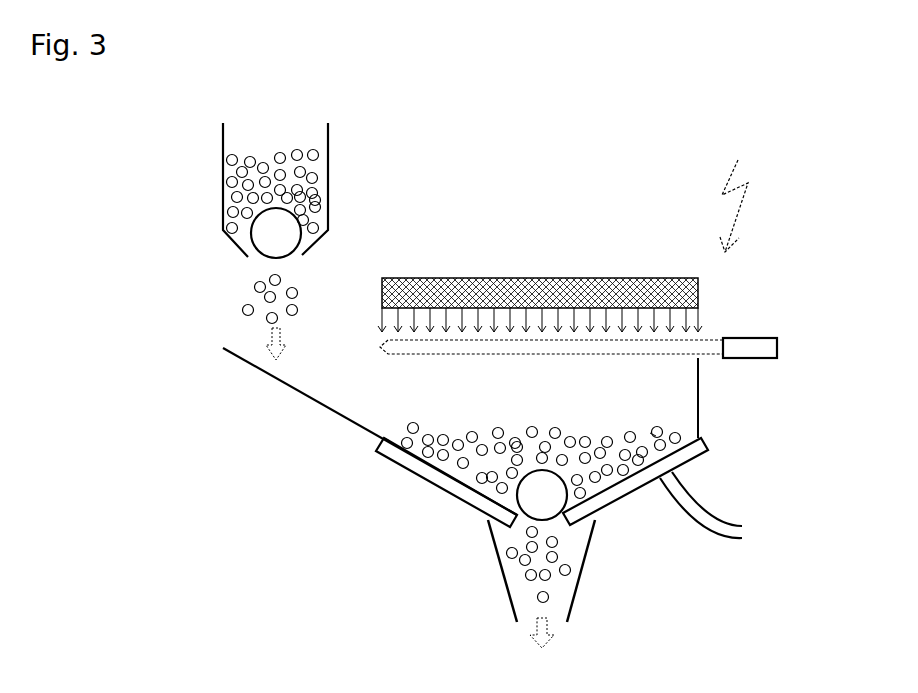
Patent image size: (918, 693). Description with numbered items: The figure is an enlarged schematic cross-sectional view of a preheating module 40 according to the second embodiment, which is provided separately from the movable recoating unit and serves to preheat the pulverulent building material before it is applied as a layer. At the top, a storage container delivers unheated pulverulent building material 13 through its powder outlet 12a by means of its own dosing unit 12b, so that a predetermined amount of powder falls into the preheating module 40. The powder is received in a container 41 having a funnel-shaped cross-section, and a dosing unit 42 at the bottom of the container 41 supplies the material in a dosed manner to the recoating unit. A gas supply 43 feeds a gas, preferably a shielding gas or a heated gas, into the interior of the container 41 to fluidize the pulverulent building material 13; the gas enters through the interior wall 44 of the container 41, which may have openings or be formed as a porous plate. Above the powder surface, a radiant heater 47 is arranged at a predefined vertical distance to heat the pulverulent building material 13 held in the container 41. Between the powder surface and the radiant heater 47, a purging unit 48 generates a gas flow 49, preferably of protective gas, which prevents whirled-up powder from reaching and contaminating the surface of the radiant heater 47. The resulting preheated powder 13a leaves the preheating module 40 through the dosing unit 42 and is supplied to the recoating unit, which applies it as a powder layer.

The powder outlet 12a is at (330, 132).
The dosing unit 12b is at (285, 238).
The pulverulent building material 13 is at (222, 160).
The preheated powder 13a is at (506, 556).
The preheating module 40 is at (743, 185).
The container 41 is at (457, 502).
The dosing unit 42 is at (592, 515).
The gas supply 43 is at (697, 517).
The interior wall 44 is at (398, 430).
The radiant heater 47 is at (497, 278).
The purging unit 48 is at (733, 337).
The gas flow 49 is at (565, 357).